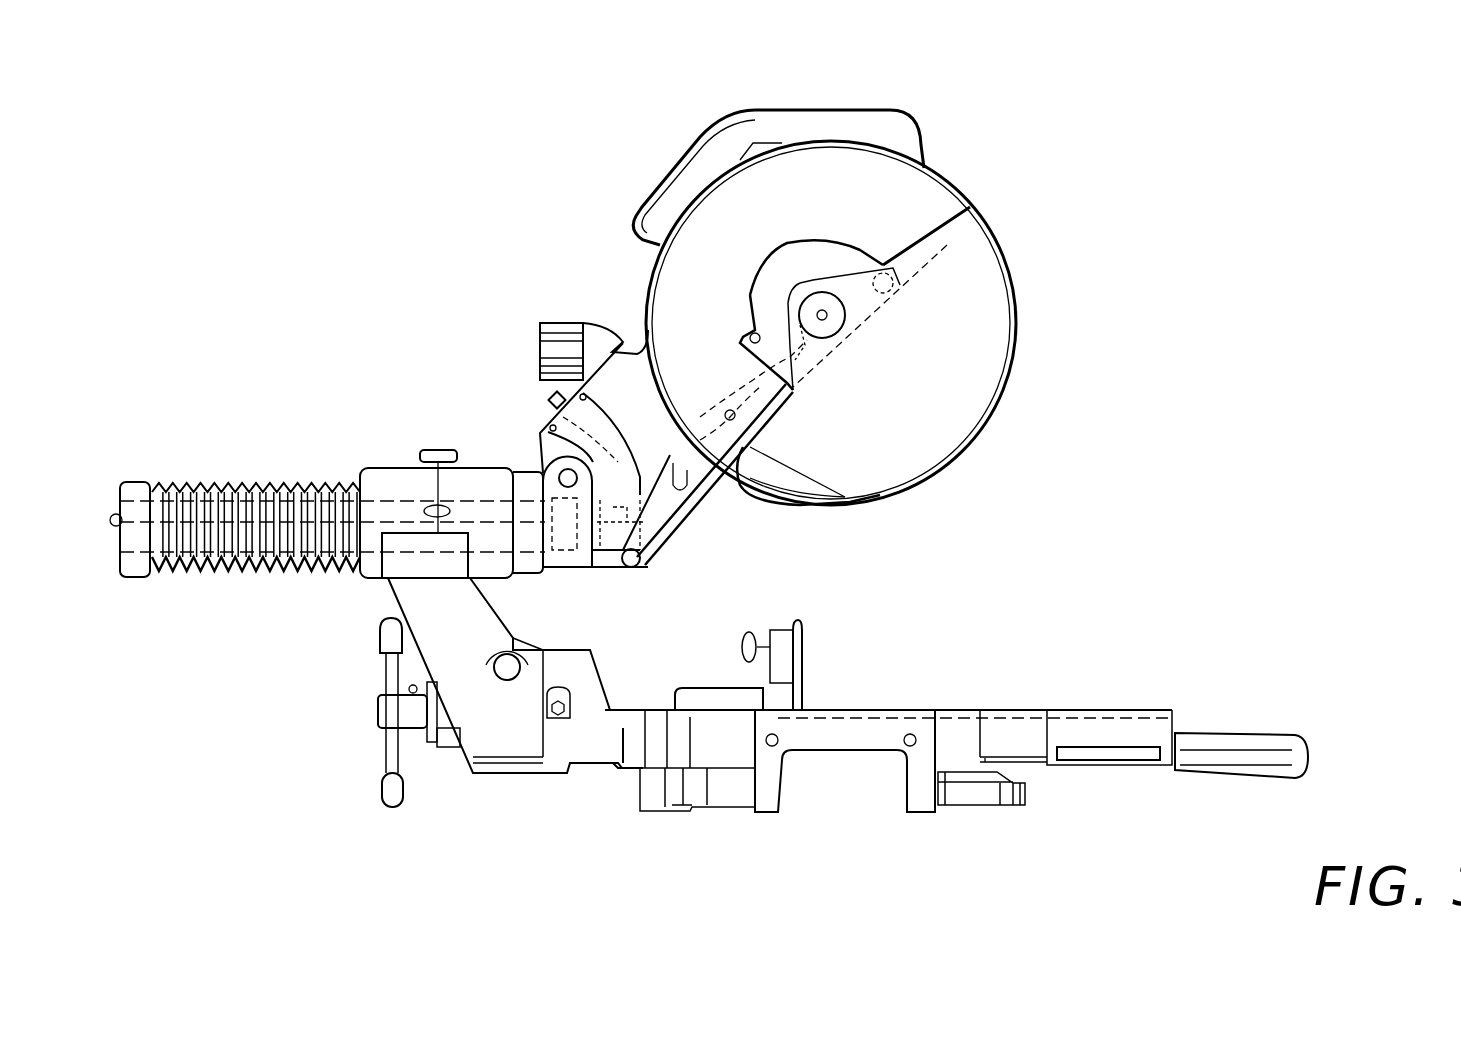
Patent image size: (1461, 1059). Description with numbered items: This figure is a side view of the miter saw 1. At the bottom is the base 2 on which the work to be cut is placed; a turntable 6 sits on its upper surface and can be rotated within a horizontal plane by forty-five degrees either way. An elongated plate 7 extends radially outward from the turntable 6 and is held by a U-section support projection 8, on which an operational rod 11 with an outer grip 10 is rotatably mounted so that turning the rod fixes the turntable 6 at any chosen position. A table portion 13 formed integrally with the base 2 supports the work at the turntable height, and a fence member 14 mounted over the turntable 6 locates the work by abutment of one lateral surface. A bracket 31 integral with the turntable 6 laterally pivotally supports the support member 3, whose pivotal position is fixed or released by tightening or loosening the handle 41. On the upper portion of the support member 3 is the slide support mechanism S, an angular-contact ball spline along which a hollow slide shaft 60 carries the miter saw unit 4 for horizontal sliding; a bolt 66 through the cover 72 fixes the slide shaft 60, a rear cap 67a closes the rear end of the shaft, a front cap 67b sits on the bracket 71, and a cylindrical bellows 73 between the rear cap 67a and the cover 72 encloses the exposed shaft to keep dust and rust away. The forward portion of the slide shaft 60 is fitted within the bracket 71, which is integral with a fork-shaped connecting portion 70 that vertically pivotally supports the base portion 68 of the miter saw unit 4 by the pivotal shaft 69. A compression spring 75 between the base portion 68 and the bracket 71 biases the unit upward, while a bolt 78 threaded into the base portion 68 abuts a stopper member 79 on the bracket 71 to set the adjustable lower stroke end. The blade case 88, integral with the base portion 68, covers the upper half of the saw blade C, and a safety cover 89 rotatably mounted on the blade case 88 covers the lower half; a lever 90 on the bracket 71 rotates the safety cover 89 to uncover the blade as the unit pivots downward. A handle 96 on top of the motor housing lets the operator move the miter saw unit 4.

The miter saw 1 is at (410, 300).
The base 2 is at (724, 797).
The support member 3 is at (428, 624).
The miter saw unit 4 is at (934, 166).
The turntable 6 is at (707, 700).
The elongated plate 7 is at (1030, 715).
The support projection 8 is at (1025, 745).
The grip 10 is at (1240, 745).
The operational rod 11 is at (1130, 760).
The table portion 13 is at (846, 745).
The fence member 14 is at (800, 650).
The bracket 31 is at (590, 690).
The handle 41 is at (390, 790).
The slide shaft 60 is at (222, 480).
The bolt 66 is at (436, 448).
The rear cap 67a is at (130, 480).
The front cap 67b is at (543, 473).
The base portion 68 is at (607, 337).
The pivotal shaft 69 is at (538, 450).
The fork-shaped connecting portion 70 is at (572, 565).
The bracket 71 is at (603, 574).
The cover 72 is at (383, 477).
The bellows 73 is at (275, 480).
The compression spring 75 is at (533, 387).
The bolt 78 is at (562, 313).
The stopper member 79 is at (673, 505).
The blade case 88 is at (852, 165).
The safety cover 89 is at (990, 303).
The lever 90 is at (640, 553).
The handle 96 is at (790, 112).
The slide support mechanism S is at (345, 425).
The saw blade C is at (880, 500).